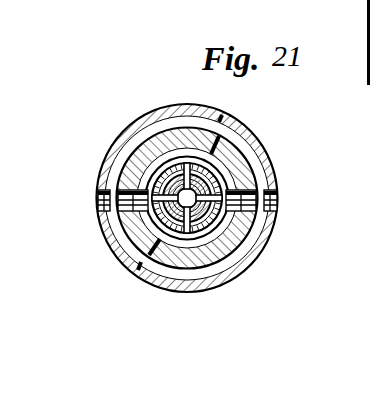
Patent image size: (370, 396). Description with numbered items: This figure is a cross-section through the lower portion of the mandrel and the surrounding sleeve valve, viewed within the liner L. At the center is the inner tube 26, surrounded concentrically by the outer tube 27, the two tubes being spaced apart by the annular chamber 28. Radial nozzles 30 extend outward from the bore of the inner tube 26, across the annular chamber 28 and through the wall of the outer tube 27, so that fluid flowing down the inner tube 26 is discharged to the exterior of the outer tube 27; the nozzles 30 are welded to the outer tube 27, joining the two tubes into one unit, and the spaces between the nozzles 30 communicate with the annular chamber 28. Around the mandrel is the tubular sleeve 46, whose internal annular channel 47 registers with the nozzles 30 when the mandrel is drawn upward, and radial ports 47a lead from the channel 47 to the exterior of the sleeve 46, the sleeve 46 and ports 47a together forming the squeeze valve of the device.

The inner tube 26 is at (241, 165).
The outer tube 27 is at (252, 160).
The liner L is at (262, 180).
The radial nozzles 30 is at (250, 186).
The radial ports 47a is at (99, 190).
The internal annular channel 47 is at (131, 240).
The tubular sleeve 46 is at (250, 226).
The annular chamber 28 is at (241, 256).